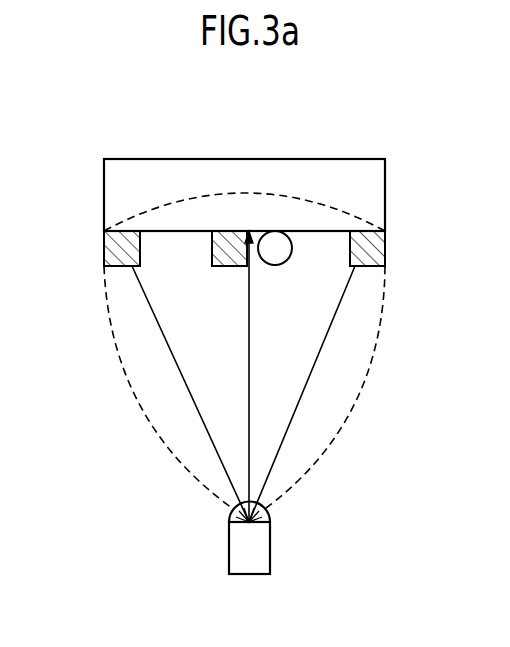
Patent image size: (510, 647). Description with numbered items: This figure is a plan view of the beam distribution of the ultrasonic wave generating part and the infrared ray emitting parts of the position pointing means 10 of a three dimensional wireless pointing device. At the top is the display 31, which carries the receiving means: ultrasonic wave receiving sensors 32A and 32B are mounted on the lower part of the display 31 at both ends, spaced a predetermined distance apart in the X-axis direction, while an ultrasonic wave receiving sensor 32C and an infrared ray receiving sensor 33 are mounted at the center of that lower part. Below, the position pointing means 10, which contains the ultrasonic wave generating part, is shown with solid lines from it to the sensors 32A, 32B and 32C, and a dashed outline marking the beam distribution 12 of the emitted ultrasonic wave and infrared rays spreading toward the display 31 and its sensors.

The light source 10 is at (260, 546).
The ultrasonic wave generating part 12 is at (507, 352).
The display 31 is at (385, 190).
The ultrasonic wave receiving sensor 32A is at (104, 256).
The ultrasonic wave receiving sensor 32B is at (385, 247).
The ultrasonic wave receiving sensor 32C is at (216, 266).
The infrared ray receiving sensor 33 is at (278, 263).